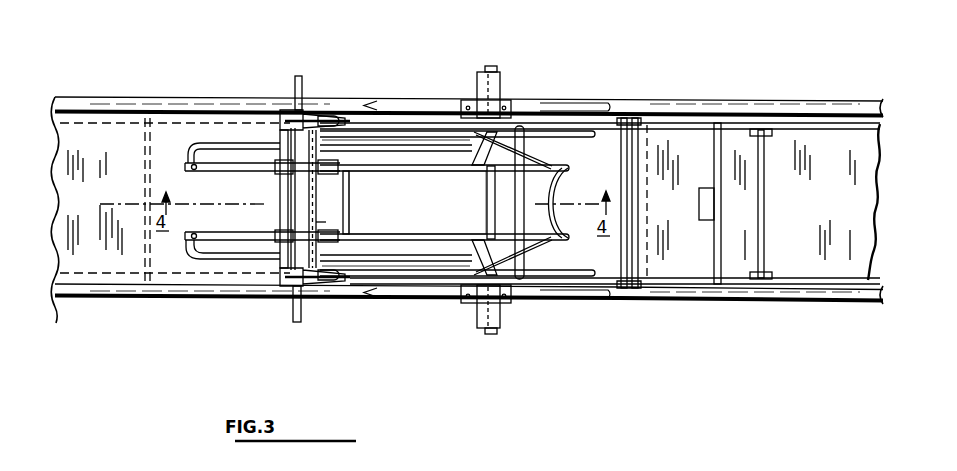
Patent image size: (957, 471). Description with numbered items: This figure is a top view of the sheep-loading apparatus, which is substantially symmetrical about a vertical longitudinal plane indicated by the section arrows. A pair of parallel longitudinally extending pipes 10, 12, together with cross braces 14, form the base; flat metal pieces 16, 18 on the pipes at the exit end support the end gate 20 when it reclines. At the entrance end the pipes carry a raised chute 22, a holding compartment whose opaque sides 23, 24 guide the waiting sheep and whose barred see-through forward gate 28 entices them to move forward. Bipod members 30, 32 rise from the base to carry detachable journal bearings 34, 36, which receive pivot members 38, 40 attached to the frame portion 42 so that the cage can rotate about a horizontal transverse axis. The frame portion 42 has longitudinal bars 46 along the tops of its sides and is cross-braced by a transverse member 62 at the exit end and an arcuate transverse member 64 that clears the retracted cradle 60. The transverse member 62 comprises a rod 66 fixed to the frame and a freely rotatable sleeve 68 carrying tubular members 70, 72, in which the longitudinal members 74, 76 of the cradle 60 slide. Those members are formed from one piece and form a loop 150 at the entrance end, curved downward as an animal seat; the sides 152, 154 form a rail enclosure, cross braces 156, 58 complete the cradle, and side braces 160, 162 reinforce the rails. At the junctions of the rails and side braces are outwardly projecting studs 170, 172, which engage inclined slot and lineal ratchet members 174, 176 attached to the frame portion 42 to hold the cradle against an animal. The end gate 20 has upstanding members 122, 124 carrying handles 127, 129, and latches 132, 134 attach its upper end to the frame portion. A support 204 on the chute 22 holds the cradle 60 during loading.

The longitudinally extending pipe 10 is at (158, 298).
The longitudinally extending pipe 12 is at (189, 98).
The cross brace 14 is at (148, 165).
The flat metal piece 16 is at (100, 128).
The flat metal piece 18 is at (100, 268).
The end gate 20 is at (281, 189).
The raised chute 22 is at (800, 118).
The side of the chute 23 is at (855, 118).
The side of the chute 24 is at (833, 288).
The forward gate 28 is at (764, 226).
The bipod member 30 is at (560, 103).
The bipod member 32 is at (575, 302).
The bearing 34 is at (500, 100).
The bearing 36 is at (502, 318).
The pivot member 38 is at (492, 66).
The pivot member 40 is at (495, 334).
The frame portion 42 is at (622, 119).
The longitudinal bar 46 is at (355, 122).
The cross brace 58 is at (502, 202).
The cradle 60 is at (438, 178).
The transverse member 62 is at (342, 151).
The transverse member 64 is at (525, 140).
The rod 66 is at (322, 247).
The sleeve 68 is at (318, 222).
The tubular member 70 is at (326, 176).
The tubular member 72 is at (280, 230).
The longitudinal member 74 is at (453, 172).
The longitudinal member 76 is at (462, 234).
The upstanding member 122 is at (280, 276).
The upstanding member 124 is at (290, 110).
The handle 127 is at (292, 303).
The handle 129 is at (298, 76).
The latch 132 is at (329, 285).
The latch 134 is at (318, 118).
The loop 150 is at (560, 190).
The side of the cradle 152 is at (400, 264).
The side of the cradle 154 is at (400, 142).
The cross brace 156 is at (350, 190).
The side brace 160 is at (472, 250).
The side brace 162 is at (472, 148).
The stud 170 is at (460, 280).
The stud 172 is at (472, 133).
The slot and lineal ratchet member 174 is at (565, 269).
The slot and lineal ratchet member 176 is at (578, 134).
The support 204 is at (712, 188).